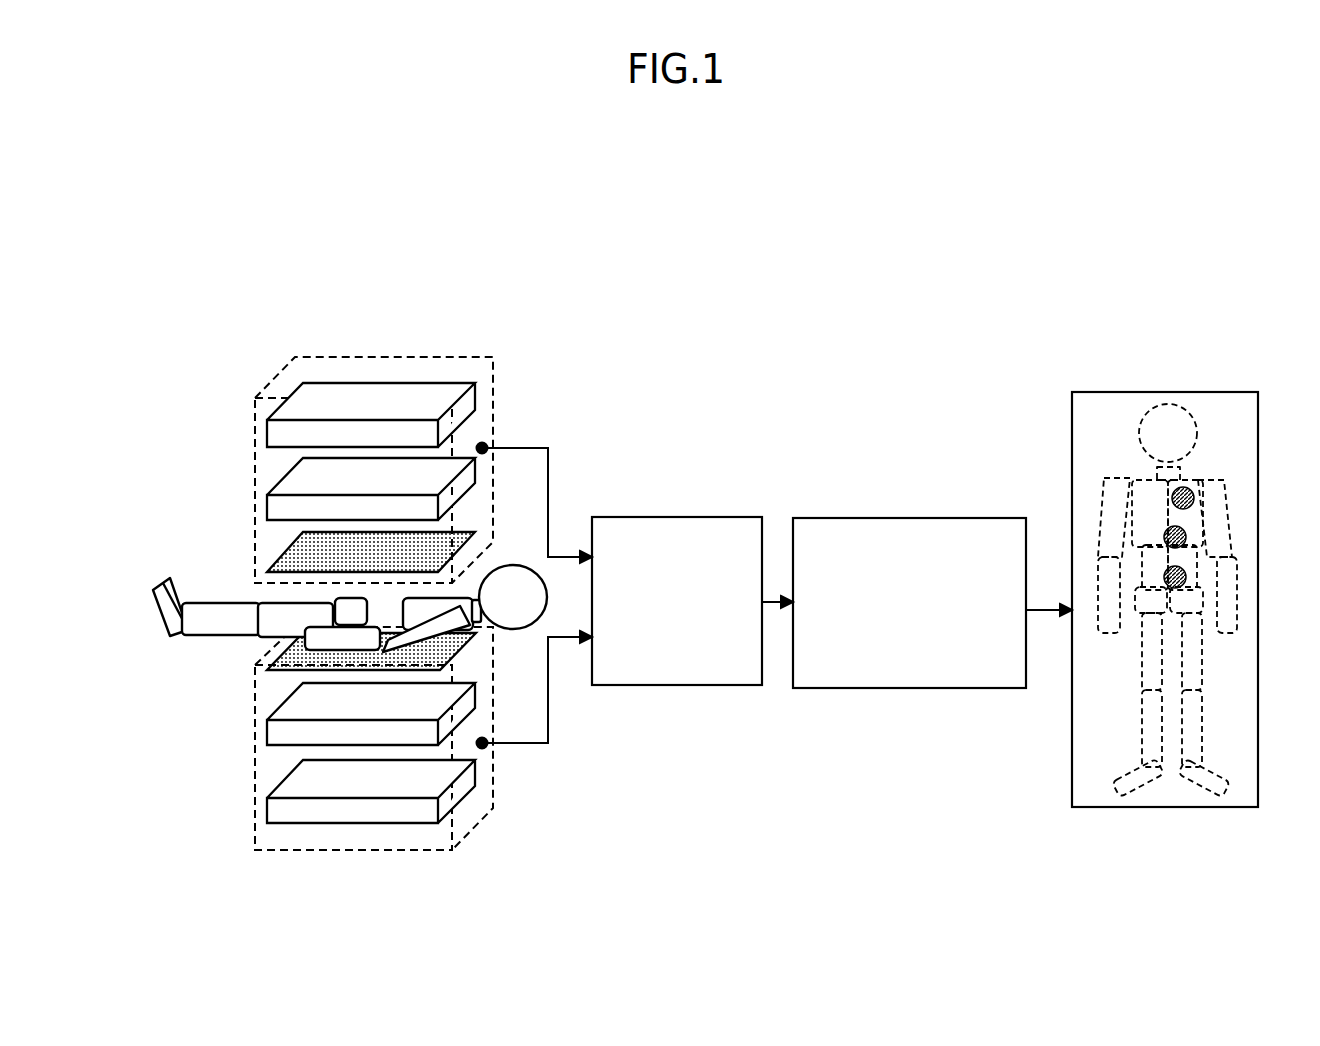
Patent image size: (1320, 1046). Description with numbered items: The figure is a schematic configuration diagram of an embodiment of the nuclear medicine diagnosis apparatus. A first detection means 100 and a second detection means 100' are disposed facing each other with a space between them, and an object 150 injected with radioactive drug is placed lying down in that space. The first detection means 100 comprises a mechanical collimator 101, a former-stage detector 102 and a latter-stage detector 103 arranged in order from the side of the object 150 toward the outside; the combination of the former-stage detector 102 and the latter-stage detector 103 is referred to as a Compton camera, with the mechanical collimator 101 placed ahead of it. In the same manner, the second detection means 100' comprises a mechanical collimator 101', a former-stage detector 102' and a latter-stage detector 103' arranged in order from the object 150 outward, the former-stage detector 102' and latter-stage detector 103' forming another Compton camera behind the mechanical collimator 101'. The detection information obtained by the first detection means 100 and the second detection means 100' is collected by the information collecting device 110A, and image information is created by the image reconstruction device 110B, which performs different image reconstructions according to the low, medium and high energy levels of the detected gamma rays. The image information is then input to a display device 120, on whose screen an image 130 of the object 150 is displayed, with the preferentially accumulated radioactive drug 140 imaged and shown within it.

The first detection means 100 is at (380, 426).
The second detection means 100' is at (374, 786).
The mechanical collimator 101 is at (321, 511).
The mechanical collimator 101' is at (321, 696).
The former-stage detector 102 is at (321, 448).
The former-stage detector 102' is at (321, 757).
The latter-stage detector 103 is at (321, 377).
The latter-stage detector 103' is at (321, 834).
The object 150 is at (218, 600).
The information collecting device 110A is at (683, 690).
The image reconstruction device 110B is at (928, 697).
The display device 120 is at (1165, 656).
The image 130 is at (1156, 599).
The radioactive drug 140 is at (1188, 493).